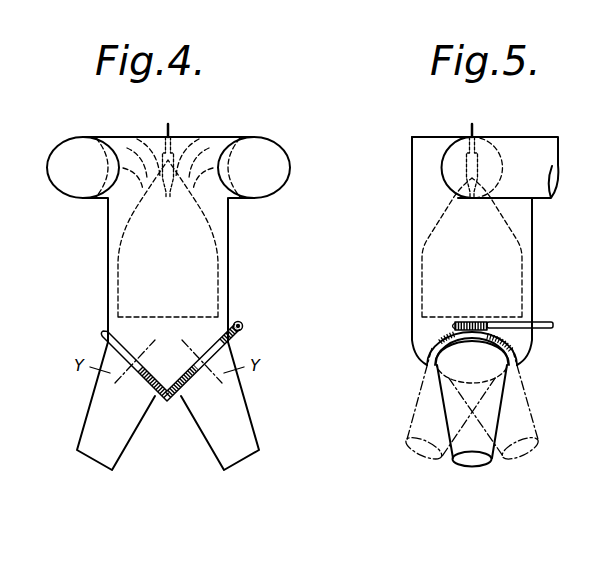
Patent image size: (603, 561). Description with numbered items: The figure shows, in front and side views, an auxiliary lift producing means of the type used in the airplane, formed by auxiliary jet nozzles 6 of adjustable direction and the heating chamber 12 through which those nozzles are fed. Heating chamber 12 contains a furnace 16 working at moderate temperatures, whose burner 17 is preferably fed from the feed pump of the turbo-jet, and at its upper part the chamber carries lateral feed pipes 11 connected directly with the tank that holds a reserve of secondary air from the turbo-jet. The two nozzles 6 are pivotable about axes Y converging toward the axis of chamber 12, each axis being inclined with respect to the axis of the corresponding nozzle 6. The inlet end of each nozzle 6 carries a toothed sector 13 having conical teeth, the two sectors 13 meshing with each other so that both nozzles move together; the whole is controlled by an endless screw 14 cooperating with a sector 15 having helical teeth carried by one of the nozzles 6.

In FIG. 4, the auxiliary jet nozzles 6 is at (212, 417).
In FIG. 5, the auxiliary jet nozzles 6 is at (472, 467).
In FIG. 4, the lateral feed pipes 11 is at (61, 148).
In FIG. 5, the lateral feed pipes 11 is at (521, 147).
In FIG. 4, the heating chamber 12 is at (229, 257).
In FIG. 5, the heating chamber 12 is at (533, 242).
In FIG. 4, the toothed sector 13 is at (149, 382).
In FIG. 4, the endless screw 14 is at (243, 325).
In FIG. 5, the endless screw 14 is at (473, 322).
In FIG. 4, the sector having helical teeth 15 is at (236, 334).
In FIG. 5, the sector having helical teeth 15 is at (447, 333).
In FIG. 4, the furnace 16 is at (118, 258).
In FIG. 5, the furnace 16 is at (426, 245).
In FIG. 4, the burner 17 is at (168, 200).
In FIG. 5, the burner 17 is at (466, 166).